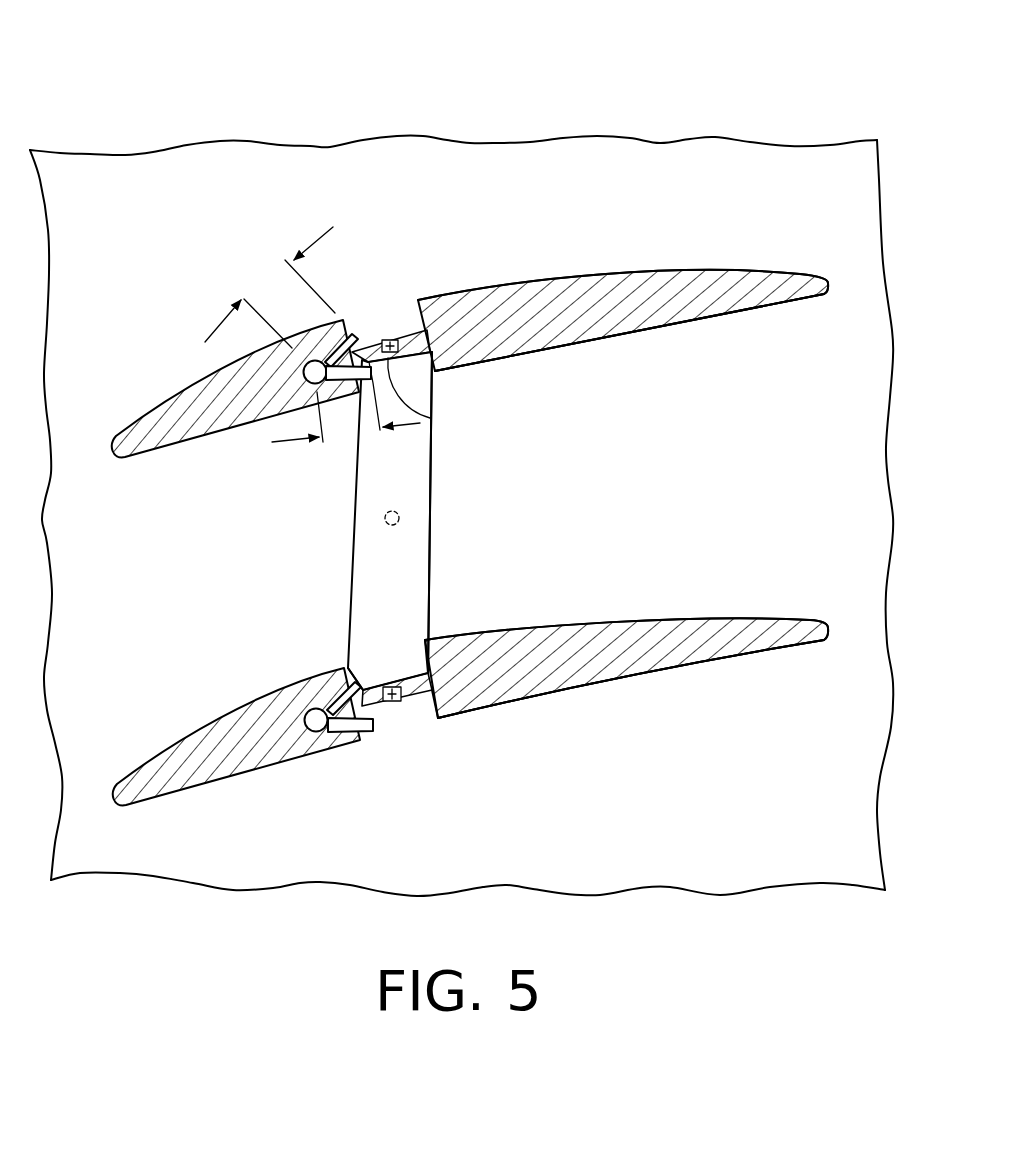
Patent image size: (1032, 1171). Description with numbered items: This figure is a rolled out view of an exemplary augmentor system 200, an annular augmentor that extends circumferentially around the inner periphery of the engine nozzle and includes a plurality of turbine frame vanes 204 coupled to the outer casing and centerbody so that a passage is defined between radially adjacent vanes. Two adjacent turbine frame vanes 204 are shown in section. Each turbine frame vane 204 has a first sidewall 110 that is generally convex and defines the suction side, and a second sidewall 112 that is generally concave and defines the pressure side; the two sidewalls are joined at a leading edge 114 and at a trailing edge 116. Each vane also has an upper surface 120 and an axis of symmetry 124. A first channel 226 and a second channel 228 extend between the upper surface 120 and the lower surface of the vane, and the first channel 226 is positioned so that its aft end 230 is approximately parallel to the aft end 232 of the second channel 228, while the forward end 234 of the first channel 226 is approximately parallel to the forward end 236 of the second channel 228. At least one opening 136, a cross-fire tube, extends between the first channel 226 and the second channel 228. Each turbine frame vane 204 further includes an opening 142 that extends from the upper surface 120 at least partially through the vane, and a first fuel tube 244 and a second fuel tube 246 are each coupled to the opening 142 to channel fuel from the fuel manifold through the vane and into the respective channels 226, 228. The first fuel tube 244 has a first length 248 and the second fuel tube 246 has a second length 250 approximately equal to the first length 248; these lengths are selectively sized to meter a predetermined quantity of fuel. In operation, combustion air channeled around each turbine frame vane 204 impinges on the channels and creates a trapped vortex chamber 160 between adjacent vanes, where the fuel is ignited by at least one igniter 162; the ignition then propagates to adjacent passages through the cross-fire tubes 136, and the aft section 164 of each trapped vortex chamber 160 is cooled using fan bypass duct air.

The augmentor system 200 is at (638, 66).
The first sidewall 110 is at (518, 282).
The second sidewall 112 is at (548, 352).
The leading edge 114 is at (114, 456).
The trailing edge 116 is at (832, 290).
The upper surface 120 is at (600, 321).
The axis of symmetry 124 is at (384, 340).
The opening (cross-fire tube) 136 is at (430, 416).
The opening 142 is at (313, 373).
The trapped vortex chamber 160 is at (408, 563).
The igniter 162 is at (402, 512).
The aft section 164 is at (433, 463).
The turbine frame vane 204 is at (745, 300).
The first channel 226 is at (413, 369).
The second channel 228 is at (391, 318).
The aft end of first channel 230 is at (430, 708).
The aft end of second channel 232 is at (425, 664).
The forward end of first channel 234 is at (378, 733).
The forward end of second channel 236 is at (349, 673).
The first fuel tube 244 is at (353, 385).
The second fuel tube 246 is at (335, 343).
The first length 248 is at (283, 440).
The second length 250 is at (218, 330).